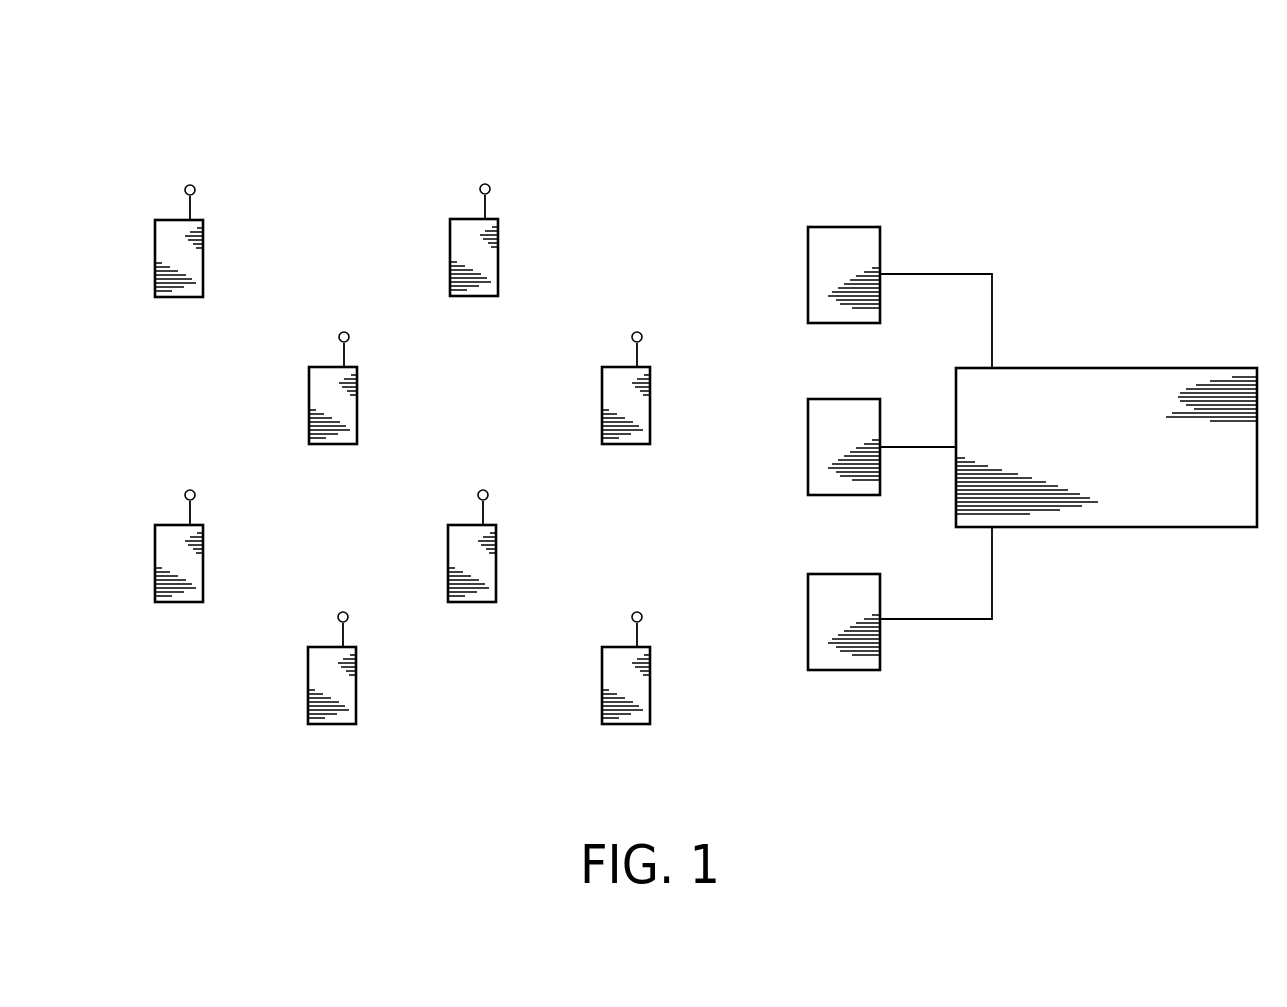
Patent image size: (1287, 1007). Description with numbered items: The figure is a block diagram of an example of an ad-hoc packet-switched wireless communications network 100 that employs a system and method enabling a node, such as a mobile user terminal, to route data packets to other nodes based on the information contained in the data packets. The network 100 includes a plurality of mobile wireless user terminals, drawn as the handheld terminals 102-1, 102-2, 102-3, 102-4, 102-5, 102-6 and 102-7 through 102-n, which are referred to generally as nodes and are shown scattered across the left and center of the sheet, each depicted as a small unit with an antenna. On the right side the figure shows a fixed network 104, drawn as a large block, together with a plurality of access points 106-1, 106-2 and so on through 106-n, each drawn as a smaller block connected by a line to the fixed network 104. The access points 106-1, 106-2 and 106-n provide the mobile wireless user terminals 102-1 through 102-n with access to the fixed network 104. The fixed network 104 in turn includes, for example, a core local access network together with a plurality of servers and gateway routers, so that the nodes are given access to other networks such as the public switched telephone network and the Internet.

The ad-hoc packet-switched wireless communications network 100 is at (742, 150).
The mobile wireless user terminal 102-1 is at (203, 558).
The mobile wireless user terminal 102-2 is at (309, 395).
The mobile wireless user terminal 102-3 is at (497, 565).
The mobile wireless user terminal 102-4 is at (308, 698).
The mobile wireless user terminal 102-5 is at (650, 405).
The mobile wireless user terminal 102-6 is at (203, 258).
The mobile wireless user terminal 102-7 is at (498, 257).
The mobile wireless user terminal 102-n is at (650, 683).
The fixed network 104 is at (1097, 368).
The access point 106-1 is at (847, 227).
The access point 106-2 is at (840, 399).
The access point 106-n is at (836, 574).